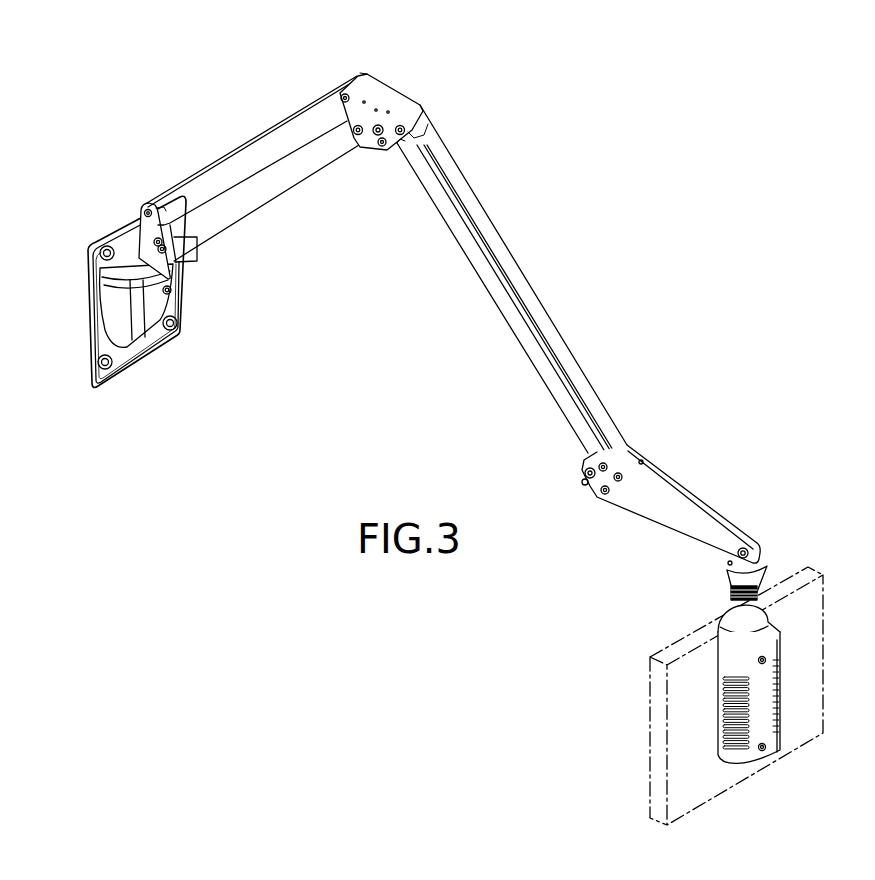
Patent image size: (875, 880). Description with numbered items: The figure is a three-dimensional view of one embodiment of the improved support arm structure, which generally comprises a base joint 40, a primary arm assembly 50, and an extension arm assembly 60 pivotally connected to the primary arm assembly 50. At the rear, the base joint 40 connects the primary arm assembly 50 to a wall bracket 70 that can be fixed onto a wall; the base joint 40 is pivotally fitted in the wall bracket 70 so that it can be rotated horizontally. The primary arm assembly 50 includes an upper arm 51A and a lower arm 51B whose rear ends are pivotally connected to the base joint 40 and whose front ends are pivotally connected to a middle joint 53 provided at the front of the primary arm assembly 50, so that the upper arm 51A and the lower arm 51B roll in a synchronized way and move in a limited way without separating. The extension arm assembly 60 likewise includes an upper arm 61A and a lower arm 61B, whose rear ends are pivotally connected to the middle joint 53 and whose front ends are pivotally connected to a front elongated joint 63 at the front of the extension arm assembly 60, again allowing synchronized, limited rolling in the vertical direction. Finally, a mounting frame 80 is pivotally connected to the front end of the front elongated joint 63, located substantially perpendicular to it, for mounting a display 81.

The base joint 40 is at (148, 228).
The primary arm assembly 50 is at (253, 152).
The upper arm 51A is at (285, 133).
The lower arm 51B is at (270, 183).
The middle joint 53 is at (383, 97).
The extension arm assembly 60 is at (578, 335).
The upper arm 61A is at (481, 228).
The lower arm 61B is at (495, 305).
The front elongated joint 63 is at (645, 508).
The wall bracket 70 is at (132, 353).
The mounting frame 80 is at (763, 732).
The display 81 is at (658, 735).